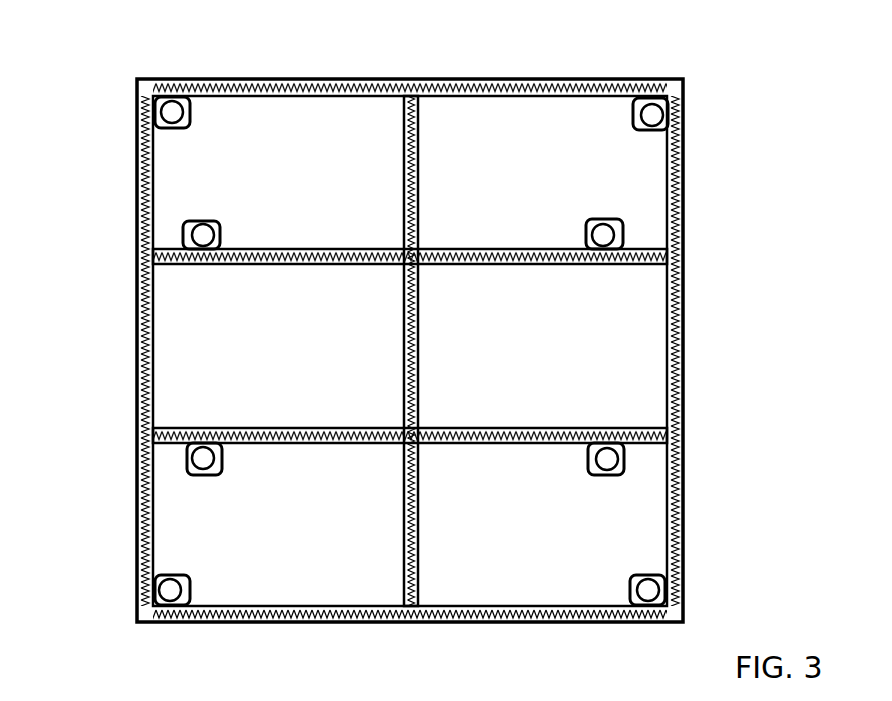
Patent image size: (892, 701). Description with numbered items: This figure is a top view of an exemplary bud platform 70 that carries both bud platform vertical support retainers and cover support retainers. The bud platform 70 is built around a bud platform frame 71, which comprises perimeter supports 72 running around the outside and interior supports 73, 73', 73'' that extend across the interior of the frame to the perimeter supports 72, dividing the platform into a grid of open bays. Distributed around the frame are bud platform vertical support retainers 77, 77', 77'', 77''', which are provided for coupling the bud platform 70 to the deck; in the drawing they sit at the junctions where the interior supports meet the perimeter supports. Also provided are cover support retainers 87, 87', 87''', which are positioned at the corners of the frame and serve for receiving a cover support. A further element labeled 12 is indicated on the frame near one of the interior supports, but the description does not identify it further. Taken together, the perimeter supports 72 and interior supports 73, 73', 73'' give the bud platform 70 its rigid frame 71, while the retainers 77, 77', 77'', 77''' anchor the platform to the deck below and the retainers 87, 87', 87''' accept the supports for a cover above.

The bud platform 70 is at (128, 73).
The central support member 12 is at (683, 257).
The bud platform frame 71 is at (683, 306).
The perimeter supports 72 is at (683, 363).
The interior support 73 is at (410, 202).
The interior support 73' is at (542, 298).
The interior support 73'' is at (410, 376).
The bud platform vertical support retainer 77 is at (573, 183).
The bud platform vertical support retainer 77' is at (674, 468).
The bud platform vertical support retainer 77'' is at (134, 457).
The bud platform vertical support retainer 77''' is at (136, 232).
The cover support retainer 87 is at (711, 143).
The cover support retainer 87' is at (348, 564).
The cover support retainer 87''' is at (115, 147).